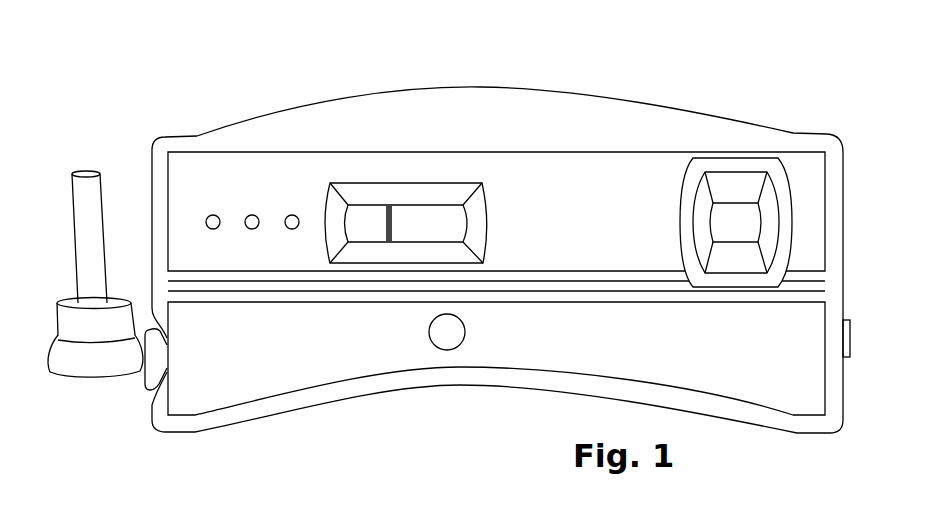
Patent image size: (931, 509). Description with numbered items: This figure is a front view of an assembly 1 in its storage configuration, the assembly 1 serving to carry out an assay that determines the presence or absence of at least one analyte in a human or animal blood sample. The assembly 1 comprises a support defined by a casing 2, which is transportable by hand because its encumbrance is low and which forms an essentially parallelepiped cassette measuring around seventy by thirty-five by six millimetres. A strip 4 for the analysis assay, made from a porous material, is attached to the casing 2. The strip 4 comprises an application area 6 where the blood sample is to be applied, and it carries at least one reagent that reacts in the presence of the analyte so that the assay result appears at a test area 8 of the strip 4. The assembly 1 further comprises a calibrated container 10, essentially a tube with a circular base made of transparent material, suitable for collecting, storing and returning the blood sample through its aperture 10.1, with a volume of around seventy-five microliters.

The assembly 1 is at (226, 60).
The casing 2 is at (577, 177).
The strip 4 is at (435, 223).
The application area 6 is at (734, 213).
The test area 8 is at (374, 217).
The container 10 is at (88, 270).
The aperture 10.1 is at (88, 158).